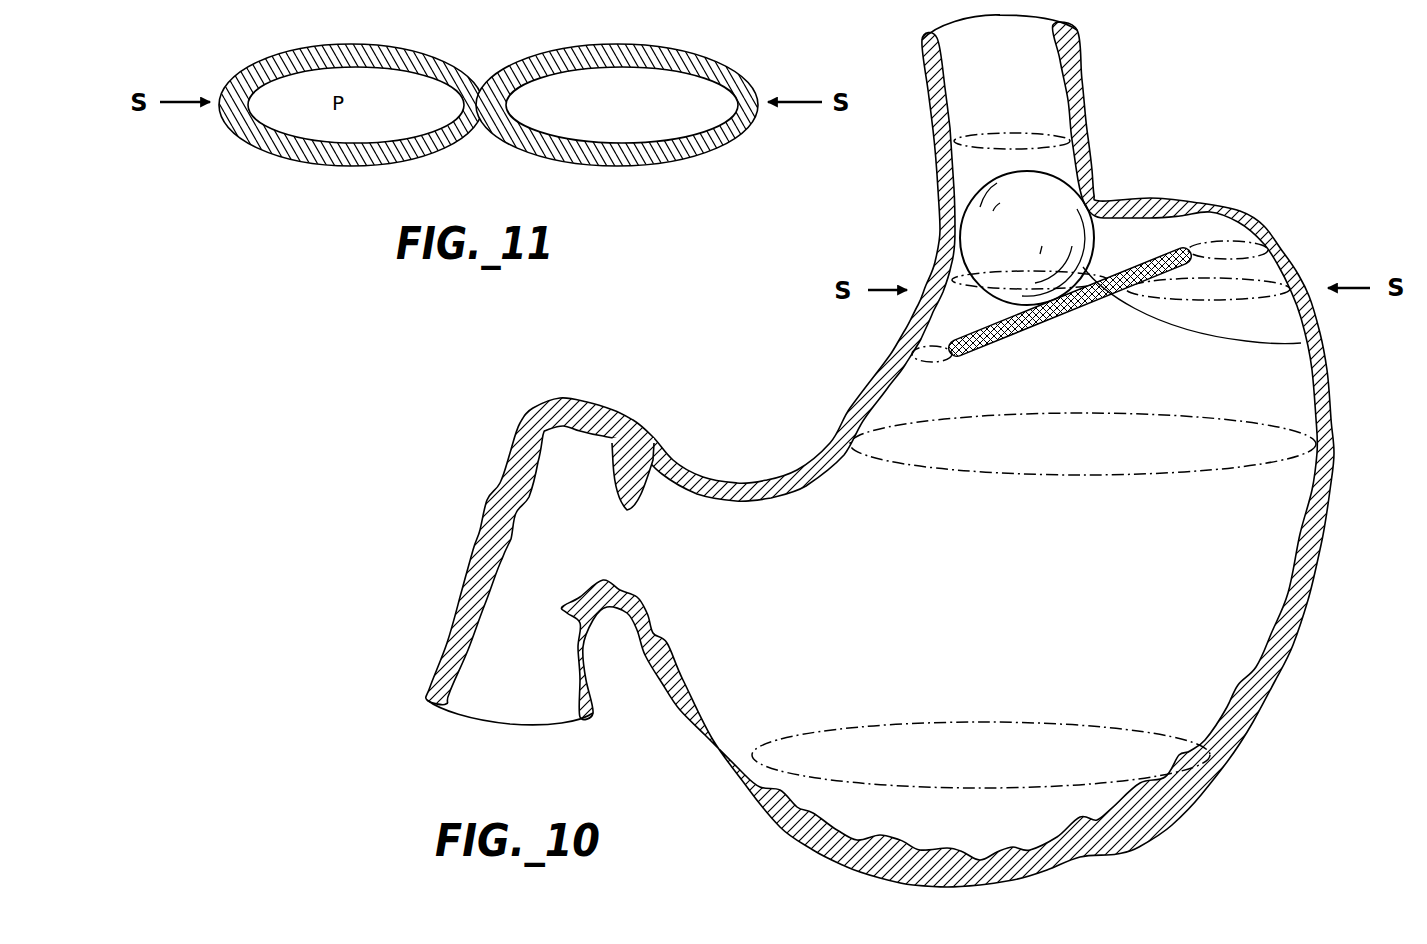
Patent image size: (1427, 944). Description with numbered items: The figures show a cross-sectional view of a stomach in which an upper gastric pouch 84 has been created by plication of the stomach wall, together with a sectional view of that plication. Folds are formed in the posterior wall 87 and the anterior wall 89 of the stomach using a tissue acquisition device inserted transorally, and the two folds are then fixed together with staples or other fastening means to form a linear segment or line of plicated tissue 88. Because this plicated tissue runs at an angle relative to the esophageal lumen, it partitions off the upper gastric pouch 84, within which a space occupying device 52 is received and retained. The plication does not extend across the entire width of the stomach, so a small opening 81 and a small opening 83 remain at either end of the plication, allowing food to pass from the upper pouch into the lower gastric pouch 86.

In FIG. 10, the space occupying device 52 is at (1067, 197).
In FIG. 10, the small opening 81 is at (924, 373).
In FIG. 10, the small opening 83 is at (1231, 251).
In FIG. 10, the upper gastric pouch 84 is at (1142, 246).
In FIG. 10, the lower gastric pouch 86 is at (1221, 586).
In FIG. 11, the posterior wall 87 is at (564, 48).
In FIG. 11, the line of plicated tissue 88 is at (557, 164).
In FIG. 10, the line of plicated tissue 88 is at (1301, 343).
In FIG. 11, the anterior wall 89 is at (478, 126).